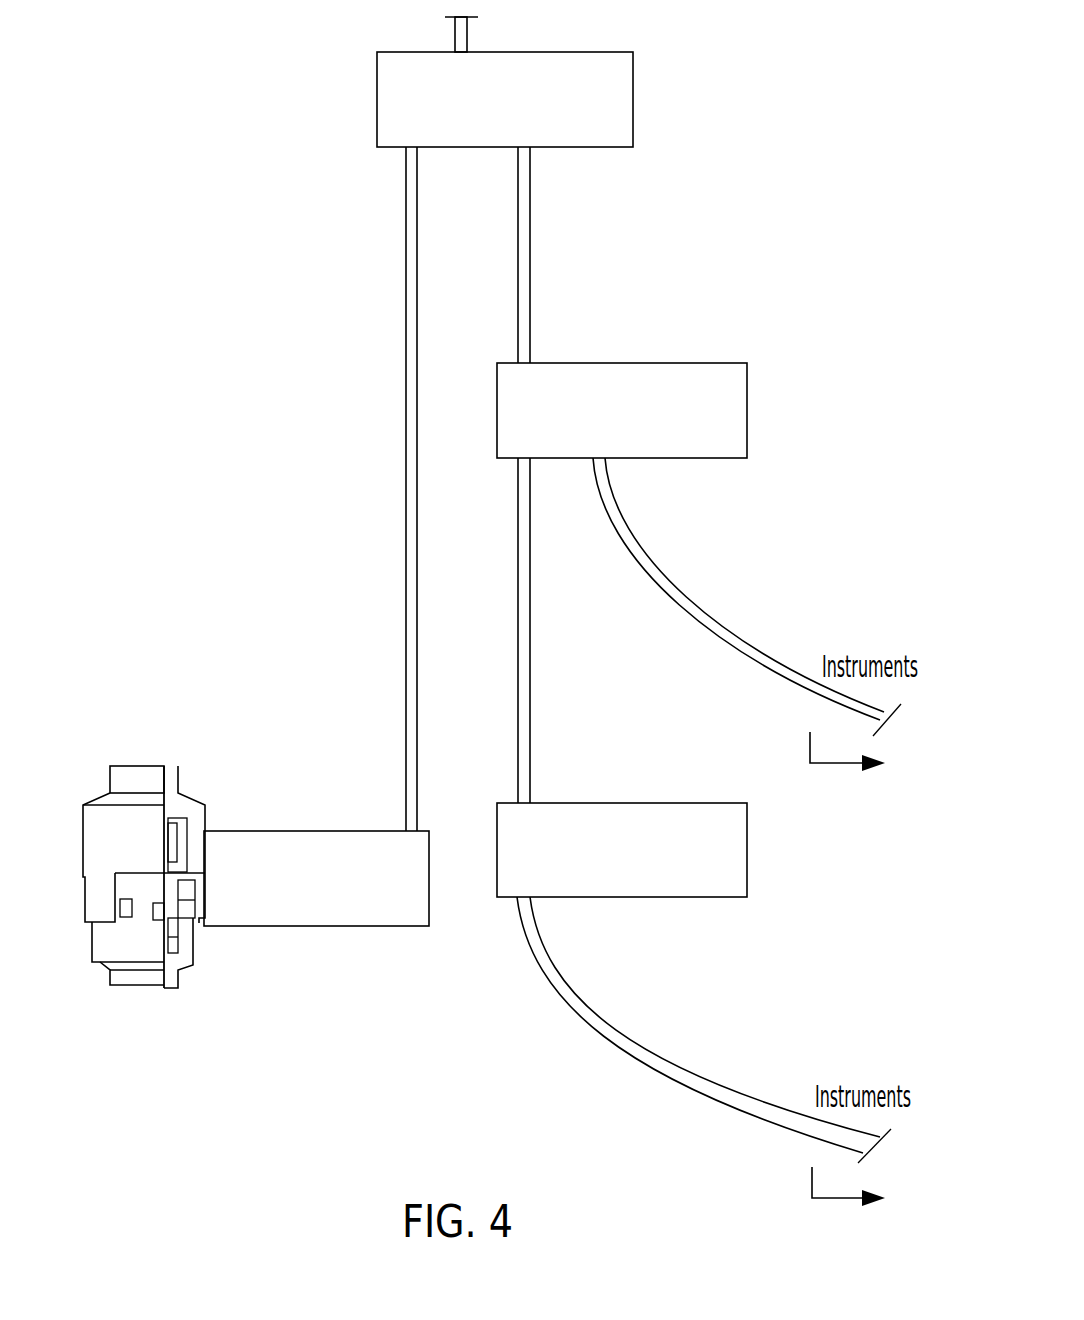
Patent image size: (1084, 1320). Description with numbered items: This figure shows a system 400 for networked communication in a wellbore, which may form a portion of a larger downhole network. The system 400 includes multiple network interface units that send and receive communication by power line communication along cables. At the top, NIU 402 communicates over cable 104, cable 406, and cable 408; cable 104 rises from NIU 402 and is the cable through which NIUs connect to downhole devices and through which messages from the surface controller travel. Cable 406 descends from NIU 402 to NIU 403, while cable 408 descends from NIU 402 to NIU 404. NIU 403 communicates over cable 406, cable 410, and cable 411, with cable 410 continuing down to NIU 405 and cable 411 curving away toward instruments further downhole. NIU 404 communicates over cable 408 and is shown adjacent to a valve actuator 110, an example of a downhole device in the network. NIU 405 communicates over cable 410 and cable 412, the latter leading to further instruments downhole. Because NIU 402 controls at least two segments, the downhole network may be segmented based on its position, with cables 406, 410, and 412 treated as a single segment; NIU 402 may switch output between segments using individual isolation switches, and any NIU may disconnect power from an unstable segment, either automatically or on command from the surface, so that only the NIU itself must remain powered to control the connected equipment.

The cable 104 is at (455, 32).
The valve actuator 110 is at (137, 765).
The system 400 is at (283, 1072).
The NIU 402 is at (538, 118).
The NIU 403 is at (661, 425).
The NIU 404 is at (353, 893).
The NIU 405 is at (653, 866).
The cable 406 is at (531, 250).
The cable 408 is at (405, 468).
The cable 410 is at (518, 553).
The cable 411 is at (703, 633).
The cable 412 is at (557, 987).